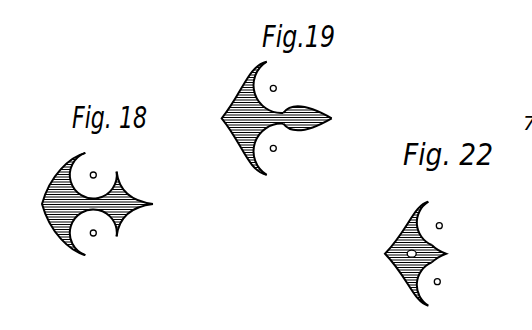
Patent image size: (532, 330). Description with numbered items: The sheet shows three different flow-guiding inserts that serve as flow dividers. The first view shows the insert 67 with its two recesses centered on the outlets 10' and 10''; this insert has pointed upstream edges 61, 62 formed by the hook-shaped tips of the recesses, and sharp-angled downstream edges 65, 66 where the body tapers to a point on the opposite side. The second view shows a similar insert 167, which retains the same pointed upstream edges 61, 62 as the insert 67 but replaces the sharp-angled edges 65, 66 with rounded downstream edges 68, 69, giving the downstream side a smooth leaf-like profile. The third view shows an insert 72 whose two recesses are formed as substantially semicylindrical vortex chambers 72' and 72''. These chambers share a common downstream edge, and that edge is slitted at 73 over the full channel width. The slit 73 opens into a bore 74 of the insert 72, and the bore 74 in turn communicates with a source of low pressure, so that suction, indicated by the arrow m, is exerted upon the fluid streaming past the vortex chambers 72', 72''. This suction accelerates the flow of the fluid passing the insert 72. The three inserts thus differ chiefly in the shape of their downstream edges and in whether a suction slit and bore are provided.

In FIG. 18, the pointed upstream edge 61 is at (88, 151).
In FIG. 19, the pointed upstream edge 61 is at (265, 62).
In FIG. 18, the pointed upstream edge 62 is at (86, 262).
In FIG. 19, the pointed upstream edge 62 is at (266, 175).
In FIG. 18, the sharp-angled edge 65 is at (117, 172).
In FIG. 18, the sharp-angled edge 66 is at (117, 231).
In FIG. 18, the insert 67 is at (57, 180).
In FIG. 18, the outlet 10' is at (109, 156).
In FIG. 18, the outlet 10'' is at (110, 268).
In FIG. 19, the insert 167 is at (240, 95).
In FIG. 19, the rounded downstream edge 68 is at (300, 106).
In FIG. 19, the rounded downstream edge 69 is at (297, 132).
In FIG. 22, the insert 72 is at (395, 211).
In FIG. 22, the vortex chamber 72' is at (454, 207).
In FIG. 22, the vortex chamber 72'' is at (460, 293).
In FIG. 22, the slit 73 is at (448, 254).
In FIG. 22, the bore 74 is at (403, 245).
In FIG. 22, the arrow m is at (405, 265).